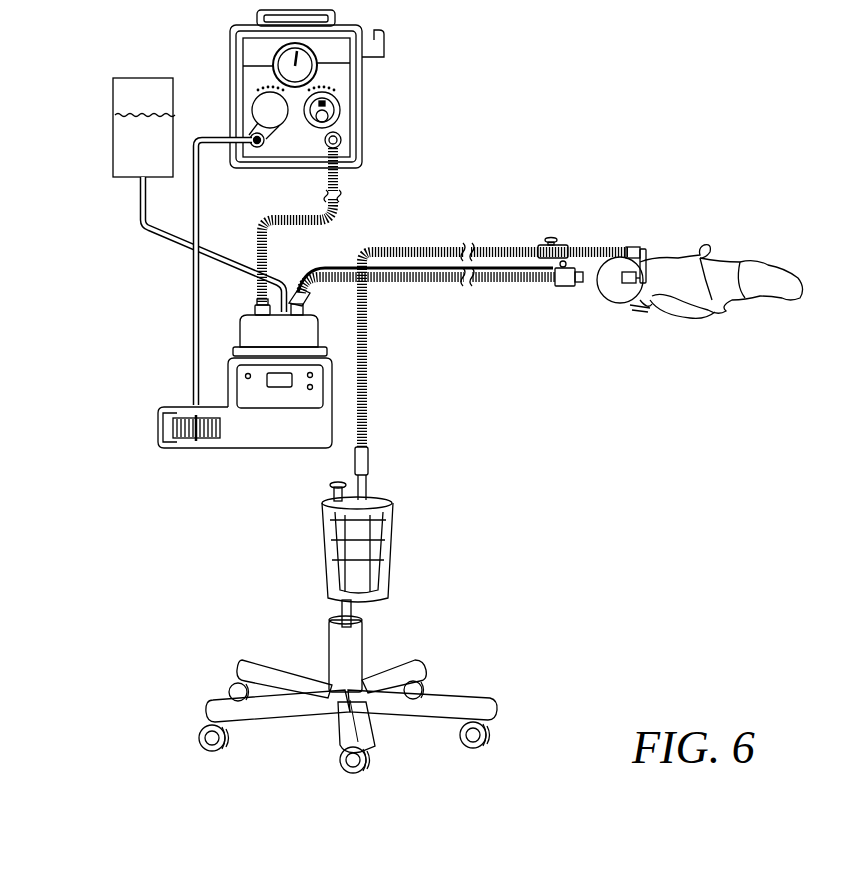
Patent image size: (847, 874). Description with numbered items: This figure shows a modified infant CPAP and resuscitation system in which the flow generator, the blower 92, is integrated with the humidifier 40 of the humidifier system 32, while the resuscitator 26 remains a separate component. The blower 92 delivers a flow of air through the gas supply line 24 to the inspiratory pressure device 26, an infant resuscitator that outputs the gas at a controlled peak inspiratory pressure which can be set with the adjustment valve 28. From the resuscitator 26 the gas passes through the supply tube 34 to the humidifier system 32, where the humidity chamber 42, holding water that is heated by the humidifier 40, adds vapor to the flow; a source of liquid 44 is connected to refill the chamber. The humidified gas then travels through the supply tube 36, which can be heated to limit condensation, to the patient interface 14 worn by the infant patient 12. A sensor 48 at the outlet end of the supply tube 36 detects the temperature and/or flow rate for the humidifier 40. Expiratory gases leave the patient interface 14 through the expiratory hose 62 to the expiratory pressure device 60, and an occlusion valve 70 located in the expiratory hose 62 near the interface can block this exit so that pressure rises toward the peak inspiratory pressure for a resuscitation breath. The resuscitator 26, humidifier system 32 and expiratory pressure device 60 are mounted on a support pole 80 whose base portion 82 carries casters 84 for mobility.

The infant patient 12 is at (677, 352).
The patient interface 14 is at (645, 255).
The gas supply line 24 is at (193, 315).
The inspiratory pressure device 26 is at (378, 83).
The adjustment valve 28 is at (340, 108).
The humidifier system 32 is at (333, 371).
The supply tube 34 is at (335, 208).
The supply tube 36 is at (497, 288).
The humidifier 40 is at (315, 400).
The humidity chamber 42 is at (318, 338).
The source of liquid 44 is at (110, 140).
The sensor 48 is at (568, 290).
The expiratory pressure device 60 is at (407, 548).
The expiratory hose 62 is at (487, 243).
The occlusion valve 70 is at (550, 234).
The support pole 80 is at (340, 605).
The base portion 82 is at (420, 660).
The casters 84 is at (495, 730).
The blower 92 is at (190, 440).